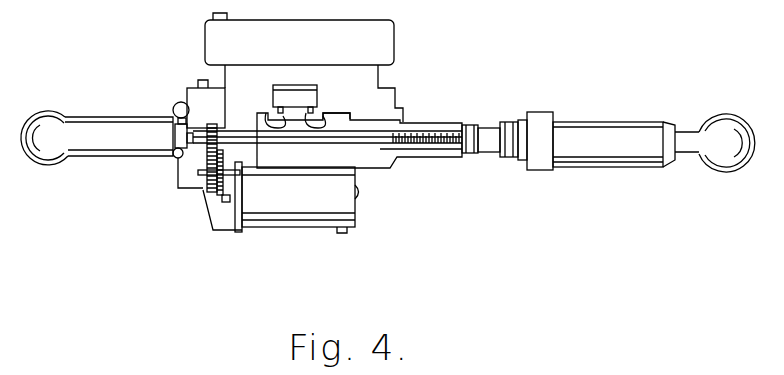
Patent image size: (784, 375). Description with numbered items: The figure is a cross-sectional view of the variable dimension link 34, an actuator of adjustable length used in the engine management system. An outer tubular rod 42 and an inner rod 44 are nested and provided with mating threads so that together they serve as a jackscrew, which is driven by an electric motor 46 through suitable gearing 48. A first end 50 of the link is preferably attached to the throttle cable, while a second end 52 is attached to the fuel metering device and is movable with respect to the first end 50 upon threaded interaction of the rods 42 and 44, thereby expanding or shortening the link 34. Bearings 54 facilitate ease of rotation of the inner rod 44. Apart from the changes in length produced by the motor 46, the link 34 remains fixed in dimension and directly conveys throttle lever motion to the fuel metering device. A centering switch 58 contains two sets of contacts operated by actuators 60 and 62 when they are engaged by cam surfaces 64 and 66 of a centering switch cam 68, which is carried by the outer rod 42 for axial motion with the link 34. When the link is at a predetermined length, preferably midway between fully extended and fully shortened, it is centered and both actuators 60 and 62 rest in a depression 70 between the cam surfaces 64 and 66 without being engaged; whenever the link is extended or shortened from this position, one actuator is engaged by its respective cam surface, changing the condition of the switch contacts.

The variable dimension link 34 is at (183, 223).
The outer tubular rod 42 is at (443, 143).
The inner rod 44 is at (238, 131).
The electric motor 46 is at (287, 223).
The gearing 48 is at (200, 188).
The first end 50 is at (58, 118).
The second end 52 is at (708, 122).
The bearings 54 is at (183, 102).
The centering switch 58 is at (308, 88).
The actuator 60 is at (299, 86).
The actuator 62 is at (308, 116).
The cam surface 64 is at (281, 121).
The cam surface 66 is at (318, 119).
The centering switch cam 68 is at (357, 117).
The depression 70 is at (295, 119).